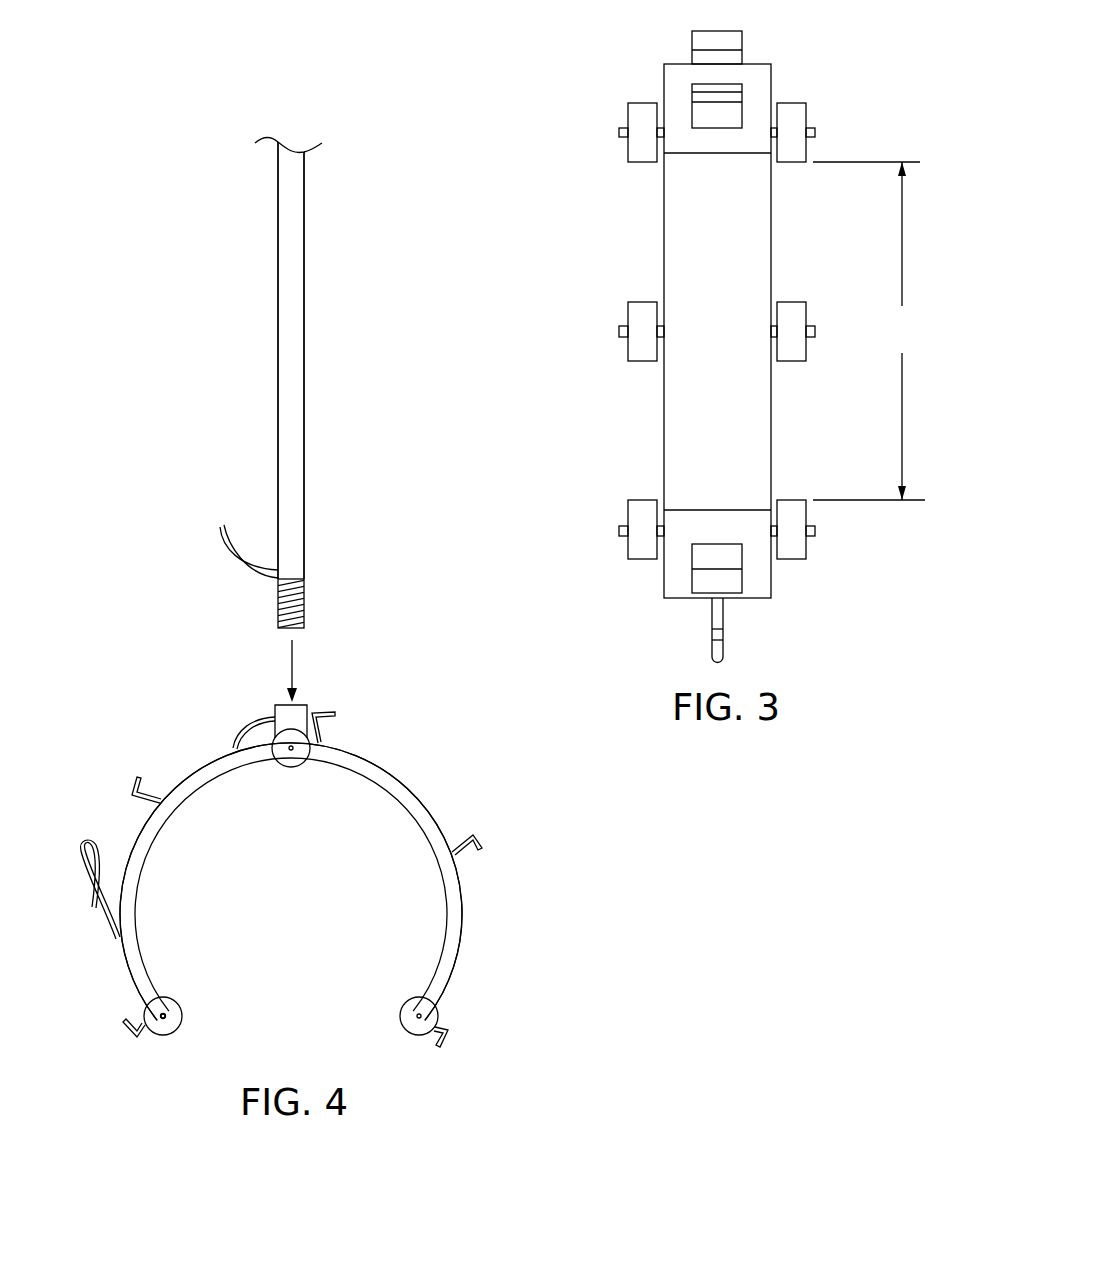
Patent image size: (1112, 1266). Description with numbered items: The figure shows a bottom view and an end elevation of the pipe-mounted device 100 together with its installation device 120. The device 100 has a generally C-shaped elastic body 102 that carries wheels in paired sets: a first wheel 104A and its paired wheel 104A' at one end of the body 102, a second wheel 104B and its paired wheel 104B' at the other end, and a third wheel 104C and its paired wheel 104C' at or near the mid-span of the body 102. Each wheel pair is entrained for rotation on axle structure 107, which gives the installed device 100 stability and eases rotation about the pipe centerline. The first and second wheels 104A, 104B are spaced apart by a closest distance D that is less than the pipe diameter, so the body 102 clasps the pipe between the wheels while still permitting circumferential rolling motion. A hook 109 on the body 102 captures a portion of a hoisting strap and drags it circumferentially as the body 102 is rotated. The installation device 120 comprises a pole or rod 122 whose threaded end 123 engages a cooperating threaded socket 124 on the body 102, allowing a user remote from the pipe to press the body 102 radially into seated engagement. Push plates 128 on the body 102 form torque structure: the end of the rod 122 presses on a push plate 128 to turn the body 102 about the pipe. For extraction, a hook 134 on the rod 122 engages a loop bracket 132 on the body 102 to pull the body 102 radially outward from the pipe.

In FIG. 3, the device 100 is at (590, 208).
In FIG. 4, the device 100 is at (137, 528).
In FIG. 4, the C-shaped body 102 is at (416, 800).
In FIG. 3, the first wheel 104A is at (602, 106).
In FIG. 4, the first wheel 104A is at (378, 1016).
In FIG. 3, the paired first wheel 104A' is at (844, 126).
In FIG. 3, the second wheel 104B is at (611, 504).
In FIG. 4, the second wheel 104B is at (203, 1018).
In FIG. 3, the paired second wheel 104B' is at (847, 530).
In FIG. 3, the third wheel 104C is at (605, 305).
In FIG. 4, the third wheel 104C is at (286, 772).
In FIG. 3, the paired third wheel 104C' is at (810, 300).
In FIG. 3, the axle structure 107 is at (619, 133).
In FIG. 4, the axle structure 107 is at (164, 1015).
In FIG. 3, the hook 109 is at (713, 645).
In FIG. 4, the hook 109 is at (90, 871).
In FIG. 4, the installation device 120 is at (180, 200).
In FIG. 4, the pole or rod 122 is at (282, 309).
In FIG. 4, the threaded end 123 is at (304, 605).
In FIG. 4, the threaded socket 124 is at (298, 712).
In FIG. 3, the push plate 128 is at (735, 92).
In FIG. 4, the push plate 128 is at (325, 735).
In FIG. 4, the loop bracket 132 is at (233, 729).
In FIG. 4, the hook 134 is at (247, 572).
In FIG. 3, the closest distance D is at (869, 331).